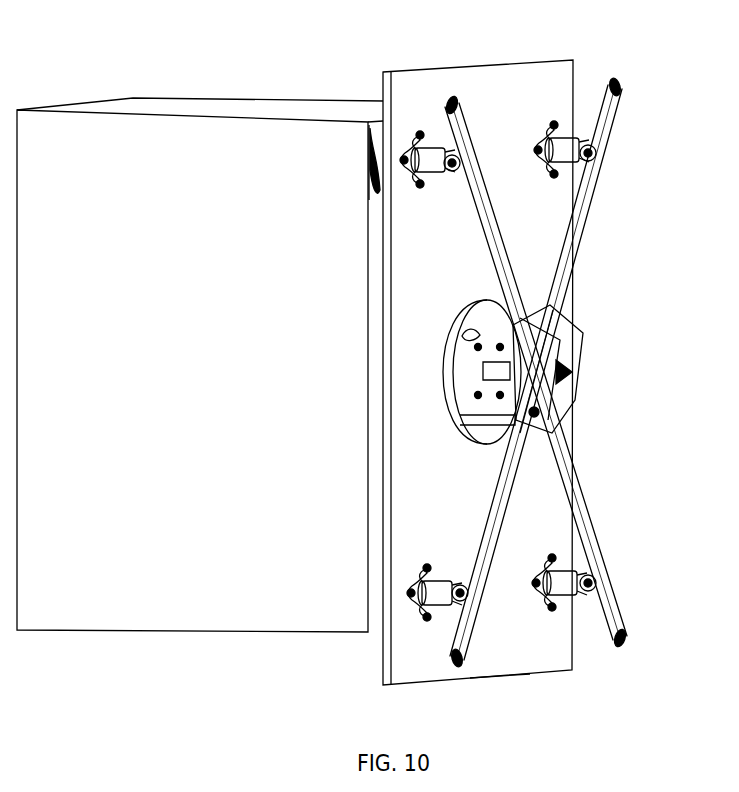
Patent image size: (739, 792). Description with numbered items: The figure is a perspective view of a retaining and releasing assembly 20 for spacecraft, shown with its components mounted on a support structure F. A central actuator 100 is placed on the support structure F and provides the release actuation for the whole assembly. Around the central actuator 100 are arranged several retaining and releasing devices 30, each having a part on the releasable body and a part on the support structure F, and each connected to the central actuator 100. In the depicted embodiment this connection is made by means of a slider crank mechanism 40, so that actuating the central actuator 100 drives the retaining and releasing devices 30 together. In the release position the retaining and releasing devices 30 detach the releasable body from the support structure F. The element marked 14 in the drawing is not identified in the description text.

The object/box 14 is at (370, 634).
The slider crank mechanism 40 is at (493, 220).
The retaining and releasing assembly 20 is at (583, 253).
The retaining and releasing device 30 is at (433, 157).
The central actuator 100 is at (558, 377).
The support structure F is at (502, 660).